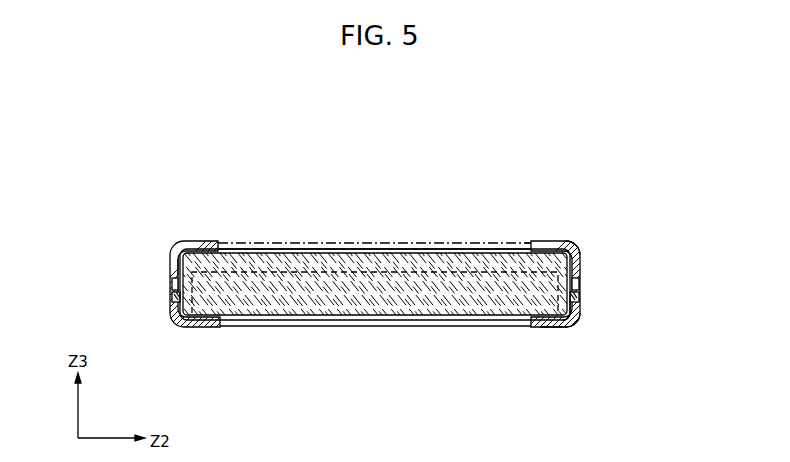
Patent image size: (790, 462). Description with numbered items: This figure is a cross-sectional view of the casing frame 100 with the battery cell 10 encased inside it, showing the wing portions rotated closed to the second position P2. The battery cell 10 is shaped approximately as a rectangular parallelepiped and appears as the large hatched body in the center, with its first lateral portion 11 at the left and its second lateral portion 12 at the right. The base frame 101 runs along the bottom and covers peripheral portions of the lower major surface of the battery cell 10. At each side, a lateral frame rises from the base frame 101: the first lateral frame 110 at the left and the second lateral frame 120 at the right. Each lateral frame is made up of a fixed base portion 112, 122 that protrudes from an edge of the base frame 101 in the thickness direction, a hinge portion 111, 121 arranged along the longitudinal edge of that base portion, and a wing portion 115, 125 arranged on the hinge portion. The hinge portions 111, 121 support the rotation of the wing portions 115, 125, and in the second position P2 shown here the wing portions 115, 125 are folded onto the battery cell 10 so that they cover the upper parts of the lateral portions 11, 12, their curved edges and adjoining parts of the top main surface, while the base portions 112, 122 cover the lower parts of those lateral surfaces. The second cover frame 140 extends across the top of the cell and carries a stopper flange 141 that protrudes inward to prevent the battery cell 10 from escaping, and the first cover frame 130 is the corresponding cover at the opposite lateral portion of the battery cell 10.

The casing frame 100 is at (210, 212).
The first lateral frame 110 is at (173, 240).
The second lateral frame 120 is at (553, 213).
The battery cell 10 is at (336, 250).
The first lateral portion 11 is at (172, 302).
The second lateral portion 12 is at (578, 307).
The base frame 101 is at (392, 327).
The hinge portion 111 is at (172, 286).
The base portion 112 is at (172, 297).
The wing portion 115 is at (172, 262).
The hinge portion 121 is at (578, 283).
The base portion 122 is at (578, 298).
The wing portion 125 is at (578, 253).
The first cover frame 130 is at (571, 327).
The second cover frame 140 is at (248, 243).
The stopper flange 141 is at (392, 243).
The second position P2 is at (492, 245).